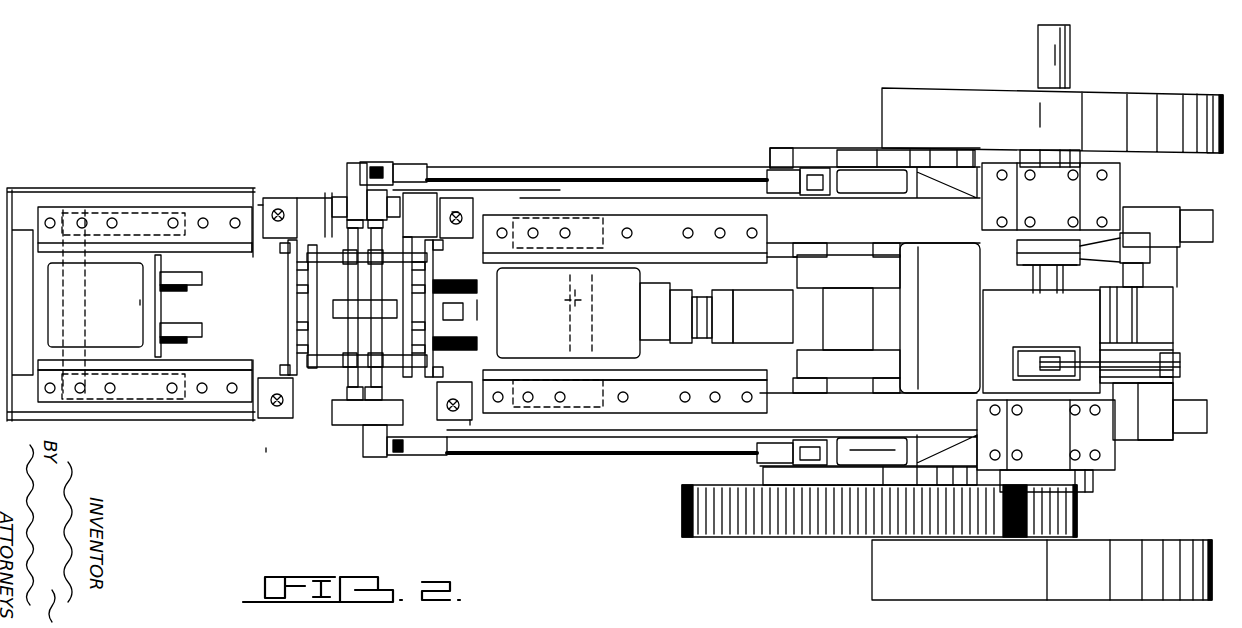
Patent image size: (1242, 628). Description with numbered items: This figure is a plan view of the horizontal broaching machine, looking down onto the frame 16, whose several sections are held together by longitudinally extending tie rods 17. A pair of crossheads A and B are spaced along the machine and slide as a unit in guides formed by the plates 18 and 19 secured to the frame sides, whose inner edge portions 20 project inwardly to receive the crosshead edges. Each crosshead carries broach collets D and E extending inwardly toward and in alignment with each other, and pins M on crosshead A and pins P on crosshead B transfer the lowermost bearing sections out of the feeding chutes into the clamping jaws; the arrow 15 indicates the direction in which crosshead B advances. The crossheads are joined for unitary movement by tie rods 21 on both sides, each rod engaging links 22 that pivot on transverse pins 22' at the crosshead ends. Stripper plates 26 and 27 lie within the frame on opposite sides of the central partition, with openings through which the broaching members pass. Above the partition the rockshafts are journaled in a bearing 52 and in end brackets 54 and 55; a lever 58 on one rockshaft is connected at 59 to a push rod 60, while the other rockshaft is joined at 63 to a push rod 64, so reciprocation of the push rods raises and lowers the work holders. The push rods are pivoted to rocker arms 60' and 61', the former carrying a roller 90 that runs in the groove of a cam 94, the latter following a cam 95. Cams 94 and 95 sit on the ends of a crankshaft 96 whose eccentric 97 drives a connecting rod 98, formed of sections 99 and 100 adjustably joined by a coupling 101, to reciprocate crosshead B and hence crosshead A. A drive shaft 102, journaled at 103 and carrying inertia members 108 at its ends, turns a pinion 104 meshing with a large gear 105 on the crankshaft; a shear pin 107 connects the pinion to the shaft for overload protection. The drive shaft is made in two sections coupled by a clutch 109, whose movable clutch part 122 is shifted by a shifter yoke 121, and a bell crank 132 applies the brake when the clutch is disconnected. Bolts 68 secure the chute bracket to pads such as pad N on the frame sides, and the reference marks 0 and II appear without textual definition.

The pivot point 0 is at (263, 205).
The arrow 15 is at (588, 303).
The frame 16 is at (673, 207).
The tie rods 17 is at (1217, 228).
The plate 18 is at (215, 210).
The plate 19 is at (613, 220).
The inner edge portions 20 is at (257, 245).
The tie rods 21 is at (257, 197).
The links 22 is at (131, 322).
The pins 22' is at (354, 320).
The stripper plate 26 is at (314, 215).
The stripper plate 27 is at (443, 247).
The bearing 52 is at (343, 311).
The bracket 54 is at (333, 197).
The bracket 55 is at (362, 437).
The lever 58 is at (347, 168).
The connection 59 is at (408, 163).
The push rod 60 is at (597, 149).
The rocker arm 60' is at (798, 153).
The rocker arm 61' is at (762, 457).
The connection 63 is at (430, 457).
The push rod 64 is at (562, 460).
The bolts 68 is at (280, 210).
The roller 90 is at (838, 150).
The cam 94 is at (772, 155).
The cam 95 is at (783, 477).
The crankshaft 96 is at (853, 328).
The eccentric 97 is at (873, 282).
The connecting rod 98 is at (757, 298).
The section 99 is at (748, 333).
The section 100 is at (673, 340).
The coupling 101 is at (700, 297).
The drive shaft 102 is at (1060, 57).
The journals 103 is at (1123, 190).
The pinion 104 is at (1063, 520).
The gear 105 is at (805, 522).
The shear pin 107 is at (1095, 487).
The inertia members 108 is at (1147, 100).
The clutch 109 is at (1023, 257).
The shifter yoke 121 is at (1150, 263).
The movable clutch part 122 is at (1017, 246).
The bell crank 132 is at (1175, 362).
The crosshead A is at (143, 300).
The crosshead B is at (484, 308).
The broach collet D is at (192, 343).
The broach collet E is at (185, 272).
The pins M is at (190, 290).
The pad N is at (272, 402).
The pins P is at (487, 293).
The section line II is at (480, 276).